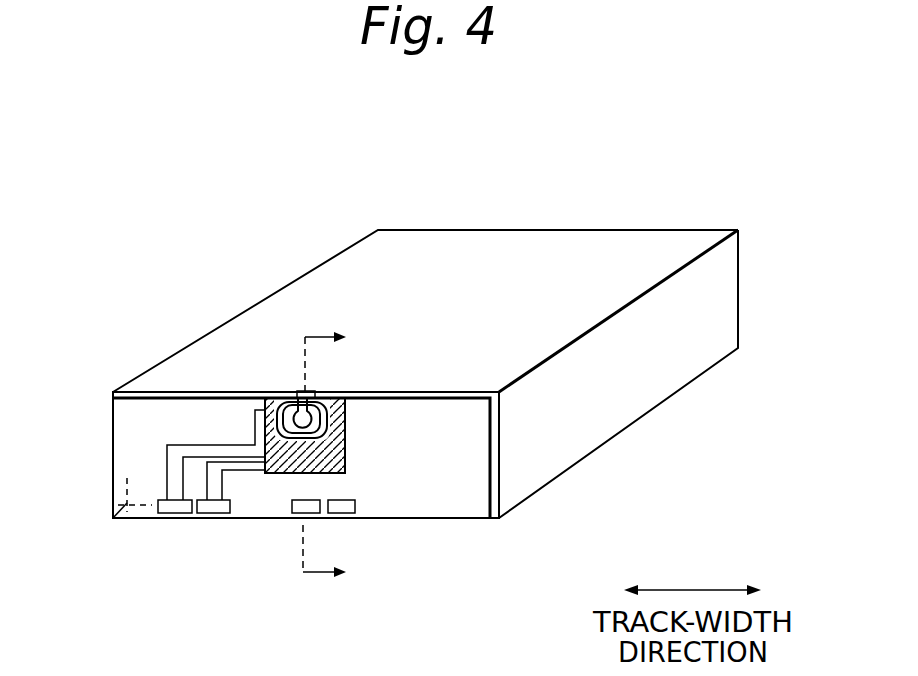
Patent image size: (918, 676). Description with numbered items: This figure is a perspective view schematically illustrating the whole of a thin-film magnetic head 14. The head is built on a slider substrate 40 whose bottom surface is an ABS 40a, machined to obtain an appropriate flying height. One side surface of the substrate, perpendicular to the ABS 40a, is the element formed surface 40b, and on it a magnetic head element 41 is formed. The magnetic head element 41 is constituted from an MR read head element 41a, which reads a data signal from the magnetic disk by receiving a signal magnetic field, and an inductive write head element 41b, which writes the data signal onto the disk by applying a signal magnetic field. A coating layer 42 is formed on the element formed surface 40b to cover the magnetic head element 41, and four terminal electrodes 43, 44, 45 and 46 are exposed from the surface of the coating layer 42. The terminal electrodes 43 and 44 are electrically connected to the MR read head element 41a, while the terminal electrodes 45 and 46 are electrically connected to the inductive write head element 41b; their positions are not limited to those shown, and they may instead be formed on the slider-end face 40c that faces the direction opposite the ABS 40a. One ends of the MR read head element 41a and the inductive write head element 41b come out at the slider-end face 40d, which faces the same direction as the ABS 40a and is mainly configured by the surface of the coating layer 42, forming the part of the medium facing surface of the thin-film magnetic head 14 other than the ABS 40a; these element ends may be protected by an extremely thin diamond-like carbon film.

The thin-film magnetic head 14 is at (497, 197).
The slider substrate 40 is at (723, 295).
The ABS 40a is at (328, 277).
The element formed surface 40b is at (142, 395).
The slider-end face 40c is at (126, 518).
The slider-end face 40d is at (225, 395).
The magnetic head element 41 is at (460, 311).
The MR read head element 41a is at (313, 388).
The inductive write head element 41b is at (333, 388).
The coating layer 42 is at (493, 473).
The terminal electrode 43 is at (172, 510).
The terminal electrode 44 is at (215, 510).
The terminal electrode 45 is at (313, 510).
The terminal electrode 46 is at (345, 507).